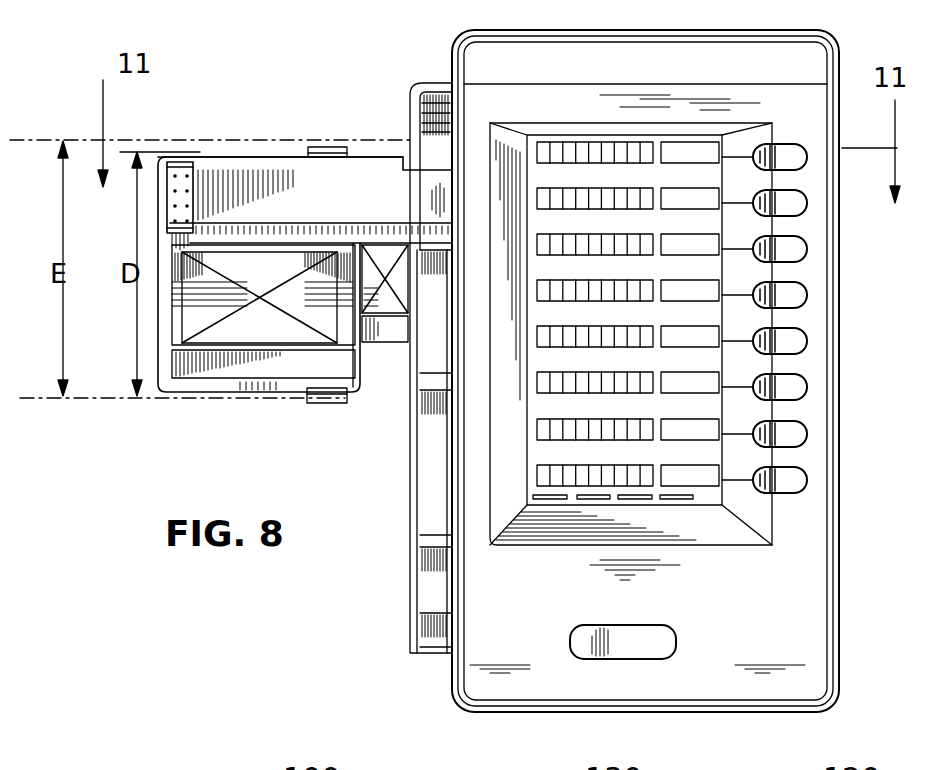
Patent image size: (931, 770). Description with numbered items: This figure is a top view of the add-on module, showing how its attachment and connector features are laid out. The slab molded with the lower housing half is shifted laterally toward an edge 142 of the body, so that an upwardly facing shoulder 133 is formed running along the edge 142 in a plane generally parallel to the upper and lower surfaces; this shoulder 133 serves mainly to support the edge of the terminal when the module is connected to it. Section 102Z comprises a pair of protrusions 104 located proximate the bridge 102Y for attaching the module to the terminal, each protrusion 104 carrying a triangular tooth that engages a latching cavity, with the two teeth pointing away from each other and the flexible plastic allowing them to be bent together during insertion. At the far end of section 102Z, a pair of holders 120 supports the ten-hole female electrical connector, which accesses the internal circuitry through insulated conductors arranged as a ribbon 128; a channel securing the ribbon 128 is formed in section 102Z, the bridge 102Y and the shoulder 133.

The edge 142 is at (438, 44).
The shoulder 133 is at (432, 470).
The ribbon 128 is at (357, 213).
The holders 120 is at (184, 150).
The protrusions 104 is at (337, 136).
The section 102Z is at (259, 405).
The bridge 102Y is at (384, 356).